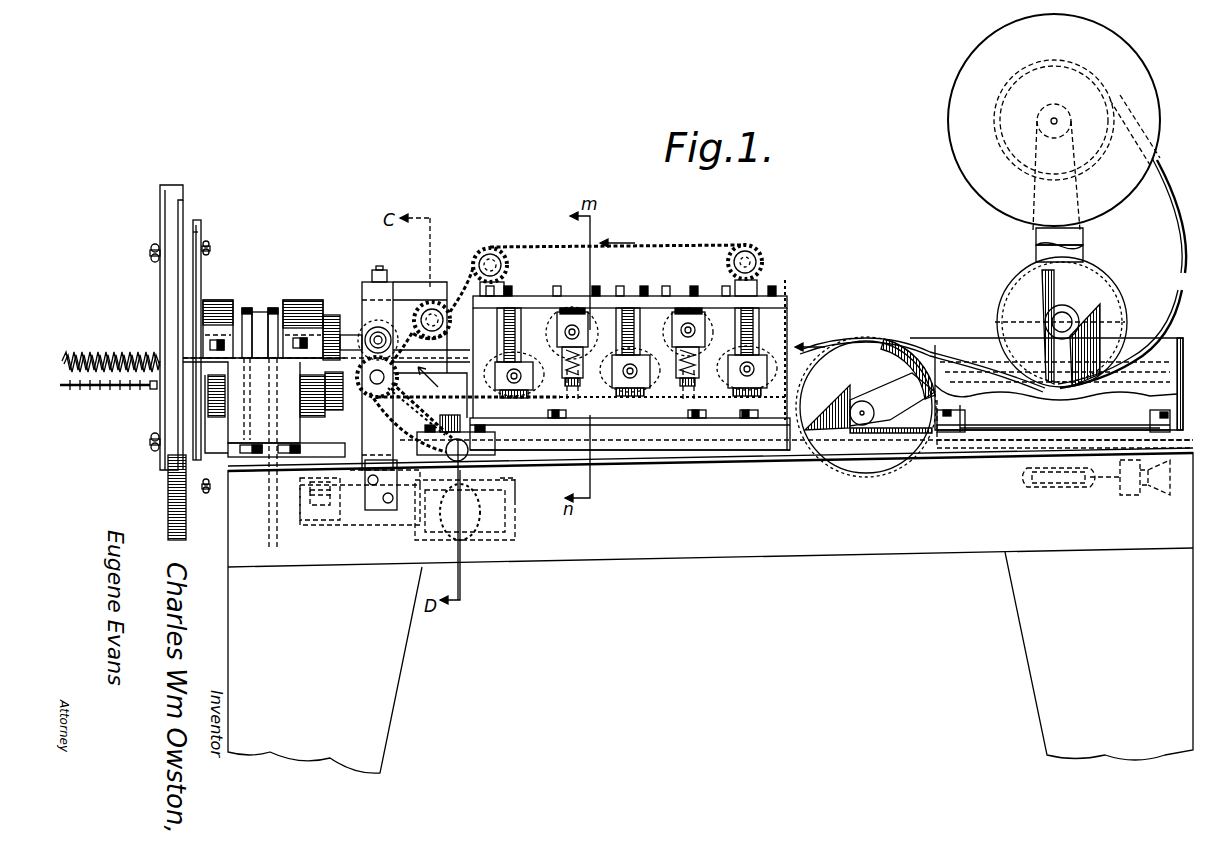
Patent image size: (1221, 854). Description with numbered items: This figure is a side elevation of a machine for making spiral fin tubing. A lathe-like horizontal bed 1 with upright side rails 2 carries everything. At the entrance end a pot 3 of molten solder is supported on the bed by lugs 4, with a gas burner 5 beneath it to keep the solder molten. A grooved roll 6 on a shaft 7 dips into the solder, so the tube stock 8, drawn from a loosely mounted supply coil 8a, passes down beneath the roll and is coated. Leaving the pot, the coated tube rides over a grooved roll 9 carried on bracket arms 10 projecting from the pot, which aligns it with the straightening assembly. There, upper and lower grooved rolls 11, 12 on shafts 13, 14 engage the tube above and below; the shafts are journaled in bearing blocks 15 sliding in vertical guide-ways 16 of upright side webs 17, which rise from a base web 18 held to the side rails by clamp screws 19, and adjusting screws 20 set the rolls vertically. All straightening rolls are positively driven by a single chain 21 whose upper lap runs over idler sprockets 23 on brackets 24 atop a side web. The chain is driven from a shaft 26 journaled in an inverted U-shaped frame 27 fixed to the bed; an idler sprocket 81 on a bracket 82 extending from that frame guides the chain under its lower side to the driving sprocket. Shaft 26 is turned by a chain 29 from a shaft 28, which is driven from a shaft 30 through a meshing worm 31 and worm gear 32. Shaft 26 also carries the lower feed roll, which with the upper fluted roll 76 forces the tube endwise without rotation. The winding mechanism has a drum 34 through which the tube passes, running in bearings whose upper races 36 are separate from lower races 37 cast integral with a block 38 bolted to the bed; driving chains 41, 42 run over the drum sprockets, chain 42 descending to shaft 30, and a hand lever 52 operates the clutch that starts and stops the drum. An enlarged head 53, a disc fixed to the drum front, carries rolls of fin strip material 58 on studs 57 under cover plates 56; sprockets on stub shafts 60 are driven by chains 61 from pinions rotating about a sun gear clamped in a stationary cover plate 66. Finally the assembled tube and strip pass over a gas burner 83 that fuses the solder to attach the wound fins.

The horizontal bed 1 is at (748, 550).
The upright side rails 2 is at (660, 555).
The pot 3 is at (936, 338).
The lugs 4 is at (950, 430).
The gas burner 5 is at (1088, 490).
The grooved roll 6 is at (1100, 280).
The shaft 7 is at (1052, 322).
The tube stock 8 is at (62, 361).
The coil 8a is at (985, 195).
The grooved roll 9 is at (862, 348).
The bracket arms 10 is at (868, 400).
The upper grooved rolls 11 is at (566, 308).
The lower grooved rolls 12 is at (560, 350).
The shafts 13 is at (575, 312).
The shafts 14 is at (520, 392).
The bearing blocks 15 is at (495, 378).
The vertical guide-ways 16 is at (620, 308).
The upright side webs 17 is at (787, 325).
The base web 18 is at (688, 452).
The clamp screws 19 is at (620, 452).
The adjusting screws 20 is at (516, 308).
The chain 21 is at (660, 245).
The idler sprockets 23 is at (510, 258).
The brackets 24 is at (496, 284).
The shaft 26 is at (374, 385).
The inverted U-shaped frame 27 is at (362, 284).
The shaft 28 is at (468, 447).
The chain 29 is at (437, 412).
The shaft 30 is at (352, 516).
The worm 31 is at (440, 428).
The worm gear 32 is at (468, 530).
The drum 34 is at (260, 312).
The upper races 36 is at (216, 300).
The lower races 37 is at (310, 417).
The block 38 is at (264, 405).
The driving chain 41 is at (246, 308).
The driving chain 42 is at (273, 308).
The hand lever 52 is at (375, 270).
The enlarged head 53 is at (168, 530).
The cover plates 56 is at (160, 296).
The studs 57 is at (150, 258).
The fin strip material 58 is at (140, 354).
The stub shaft 60 is at (209, 240).
The chains 61 is at (201, 270).
The stationary cover plate 66 is at (338, 410).
The upper fluted roll 76 is at (365, 330).
The idler sprocket 81 is at (440, 302).
The bracket 82 is at (405, 282).
The gas burner 83 is at (80, 392).